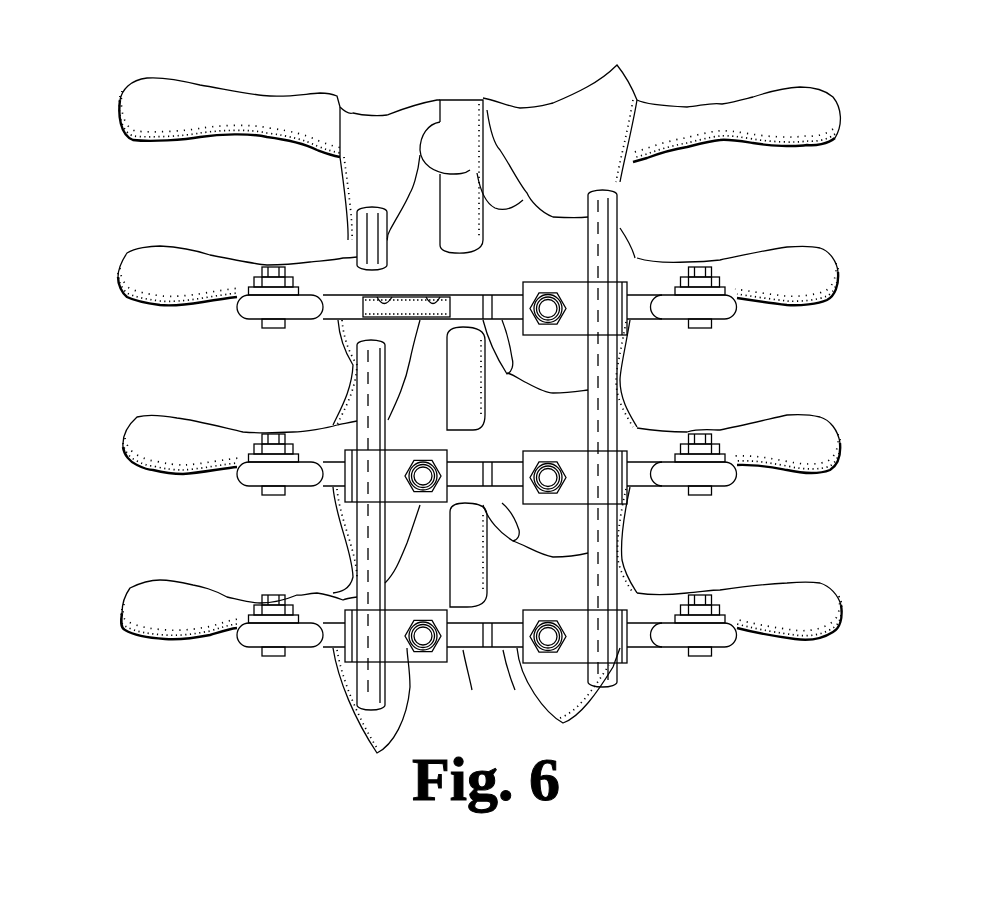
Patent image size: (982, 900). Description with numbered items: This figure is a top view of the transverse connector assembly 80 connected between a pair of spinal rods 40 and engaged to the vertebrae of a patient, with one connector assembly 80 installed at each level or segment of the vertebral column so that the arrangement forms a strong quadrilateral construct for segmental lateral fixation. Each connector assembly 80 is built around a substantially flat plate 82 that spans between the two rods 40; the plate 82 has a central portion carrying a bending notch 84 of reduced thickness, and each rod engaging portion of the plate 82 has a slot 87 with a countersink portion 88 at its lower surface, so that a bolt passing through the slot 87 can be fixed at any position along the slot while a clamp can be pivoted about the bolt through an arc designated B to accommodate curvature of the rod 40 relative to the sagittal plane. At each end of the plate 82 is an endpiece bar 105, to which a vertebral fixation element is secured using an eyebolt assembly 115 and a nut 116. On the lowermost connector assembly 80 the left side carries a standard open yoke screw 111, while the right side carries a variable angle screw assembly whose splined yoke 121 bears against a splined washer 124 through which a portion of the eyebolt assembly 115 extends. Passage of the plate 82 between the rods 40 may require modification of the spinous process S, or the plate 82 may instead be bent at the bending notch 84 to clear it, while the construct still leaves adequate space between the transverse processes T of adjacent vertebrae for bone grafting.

The spinous process S is at (458, 118).
The transverse processes T is at (173, 420).
The arc of clamp rotation B is at (605, 312).
The spinal rod 40 is at (363, 230).
The transverse connector assembly 80 is at (616, 280).
The plate 82 is at (462, 648).
The bending notch 84 is at (505, 376).
The slot 87 is at (470, 297).
The countersink portion 88 is at (398, 293).
The endpiece bar 105 is at (305, 647).
The yoke 111 is at (257, 605).
The eyebolt assembly 115 is at (263, 329).
The nut 116 is at (267, 265).
The splined yoke 121 is at (716, 603).
The splined washer 124 is at (722, 619).